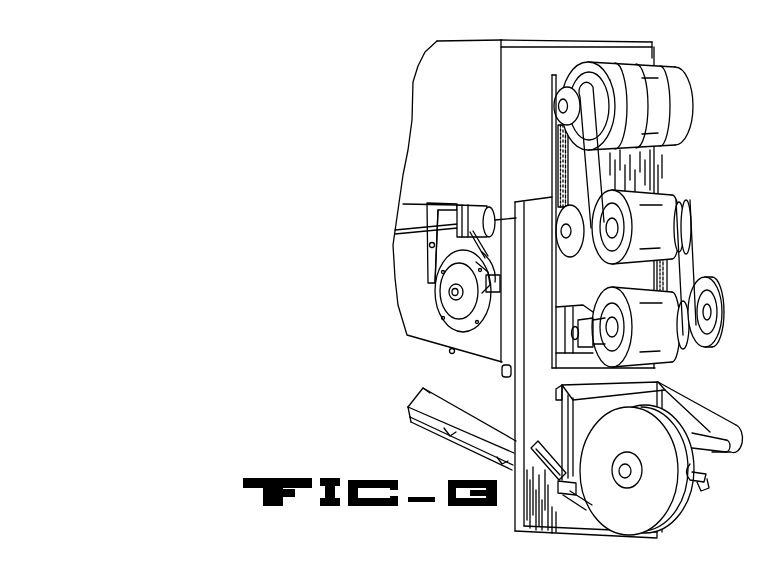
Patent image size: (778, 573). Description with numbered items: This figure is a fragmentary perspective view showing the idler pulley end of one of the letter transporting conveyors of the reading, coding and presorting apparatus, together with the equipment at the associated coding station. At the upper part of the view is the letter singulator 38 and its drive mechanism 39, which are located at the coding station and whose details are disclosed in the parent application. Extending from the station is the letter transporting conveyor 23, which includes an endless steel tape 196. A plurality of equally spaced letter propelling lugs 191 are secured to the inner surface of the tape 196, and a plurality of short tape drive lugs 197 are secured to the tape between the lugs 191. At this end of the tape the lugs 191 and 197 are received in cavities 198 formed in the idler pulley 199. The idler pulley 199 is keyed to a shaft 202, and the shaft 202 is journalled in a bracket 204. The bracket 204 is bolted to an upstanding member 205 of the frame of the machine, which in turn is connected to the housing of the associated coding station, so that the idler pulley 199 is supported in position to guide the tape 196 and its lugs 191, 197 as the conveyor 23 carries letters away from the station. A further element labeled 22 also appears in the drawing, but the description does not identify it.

The chute 22 is at (402, 396).
The letter transporting conveyor 23 is at (410, 414).
The letter singulator 38 is at (430, 86).
The drive mechanism 39 is at (693, 75).
The letter propelling lugs 191 is at (568, 390).
The endless steel tape 196 is at (590, 388).
The tape drive lugs 197 is at (502, 370).
The cavities 198 is at (692, 469).
The idler pulley 199 is at (656, 520).
The shaft 202 is at (713, 440).
The bracket 204 is at (667, 398).
The upstanding member 205 is at (524, 517).